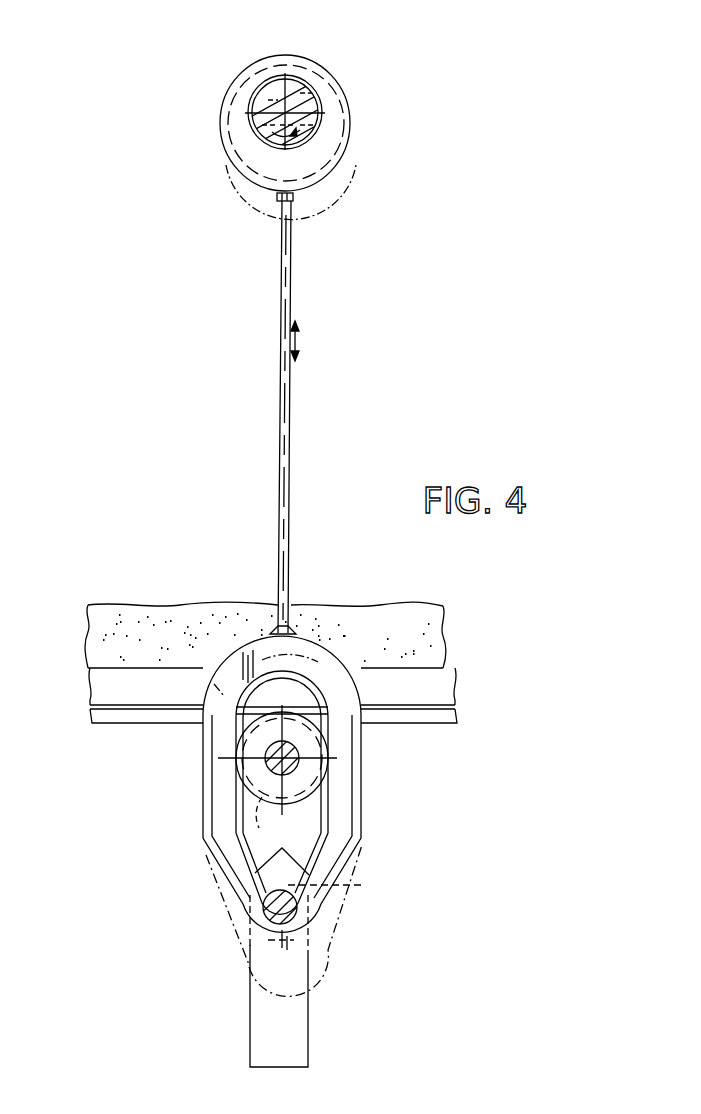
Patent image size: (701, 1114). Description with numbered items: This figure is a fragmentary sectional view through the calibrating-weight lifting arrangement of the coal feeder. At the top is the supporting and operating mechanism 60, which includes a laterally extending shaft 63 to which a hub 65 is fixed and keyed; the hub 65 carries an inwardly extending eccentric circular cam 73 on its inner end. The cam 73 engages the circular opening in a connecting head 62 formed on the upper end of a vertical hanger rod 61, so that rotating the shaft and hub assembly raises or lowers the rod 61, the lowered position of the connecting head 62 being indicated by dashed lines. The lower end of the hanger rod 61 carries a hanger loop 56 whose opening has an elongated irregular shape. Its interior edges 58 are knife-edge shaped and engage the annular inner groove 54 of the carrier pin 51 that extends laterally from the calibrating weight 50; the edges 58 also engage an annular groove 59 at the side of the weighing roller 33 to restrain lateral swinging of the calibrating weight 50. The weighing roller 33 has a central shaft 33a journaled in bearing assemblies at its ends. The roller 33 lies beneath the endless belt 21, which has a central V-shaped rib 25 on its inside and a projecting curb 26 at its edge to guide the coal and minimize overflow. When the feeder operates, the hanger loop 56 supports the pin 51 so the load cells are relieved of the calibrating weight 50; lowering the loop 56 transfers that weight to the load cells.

The operating mechanism 60 is at (281, 119).
The connecting head 62 is at (350, 118).
The shaft 63 is at (267, 72).
The hub 65 is at (307, 103).
The eccentric circular cam 73 is at (307, 83).
The hanger rod 61 is at (280, 417).
The projecting curb 26 is at (87, 680).
The endless belt 21 is at (97, 705).
The central V-shaped rib 25 is at (113, 717).
The hanger loop 56 is at (350, 798).
The interior edge 58 is at (318, 828).
The annular groove 59 is at (282, 836).
The weighing roller 33 is at (311, 772).
The central shaft 33a is at (270, 770).
The annular inner groove 54 is at (321, 913).
The carrier pin 51 is at (300, 916).
The calibrating weight 50 is at (295, 1018).